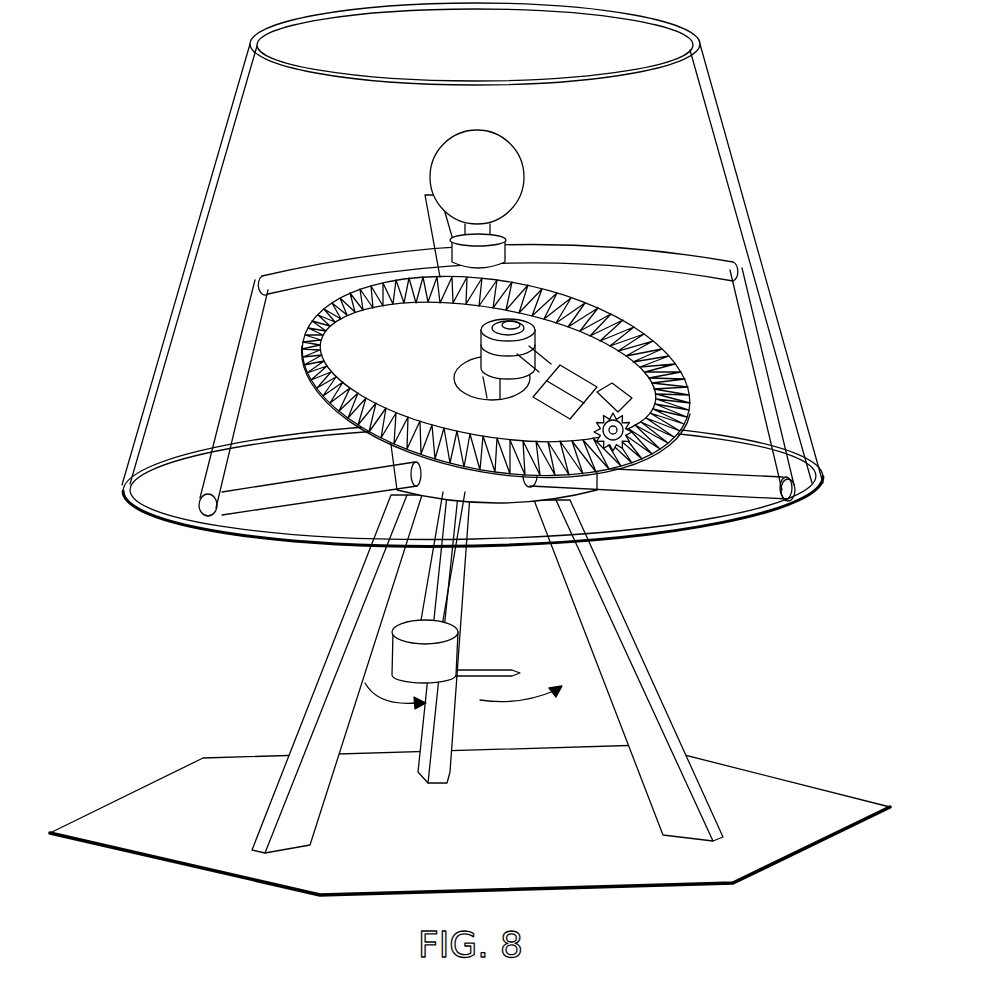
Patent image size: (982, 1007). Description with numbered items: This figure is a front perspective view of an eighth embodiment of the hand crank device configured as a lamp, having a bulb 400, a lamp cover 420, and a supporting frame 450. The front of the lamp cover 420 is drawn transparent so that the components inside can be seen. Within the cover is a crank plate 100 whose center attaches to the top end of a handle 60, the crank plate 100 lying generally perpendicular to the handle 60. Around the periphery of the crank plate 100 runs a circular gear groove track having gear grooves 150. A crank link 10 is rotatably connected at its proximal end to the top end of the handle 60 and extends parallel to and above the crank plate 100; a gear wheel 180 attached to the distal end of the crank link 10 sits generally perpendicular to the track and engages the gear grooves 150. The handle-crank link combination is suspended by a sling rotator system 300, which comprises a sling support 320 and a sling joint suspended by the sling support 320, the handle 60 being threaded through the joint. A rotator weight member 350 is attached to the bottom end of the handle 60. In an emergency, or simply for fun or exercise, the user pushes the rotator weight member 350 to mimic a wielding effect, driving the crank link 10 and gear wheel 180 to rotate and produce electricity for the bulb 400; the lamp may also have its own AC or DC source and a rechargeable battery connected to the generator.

The crank link 10 is at (541, 352).
The handle 60 is at (447, 575).
The crank plate 100 is at (385, 330).
The gear grooves 150 is at (662, 363).
The gear wheel 180 is at (632, 458).
The sling rotator system 300 is at (633, 602).
The sling support 320 is at (362, 597).
The rotator weight member 350 is at (447, 634).
The bulb 400 is at (502, 153).
The lamp cover 420 is at (663, 122).
The supporting frame 450 is at (648, 264).